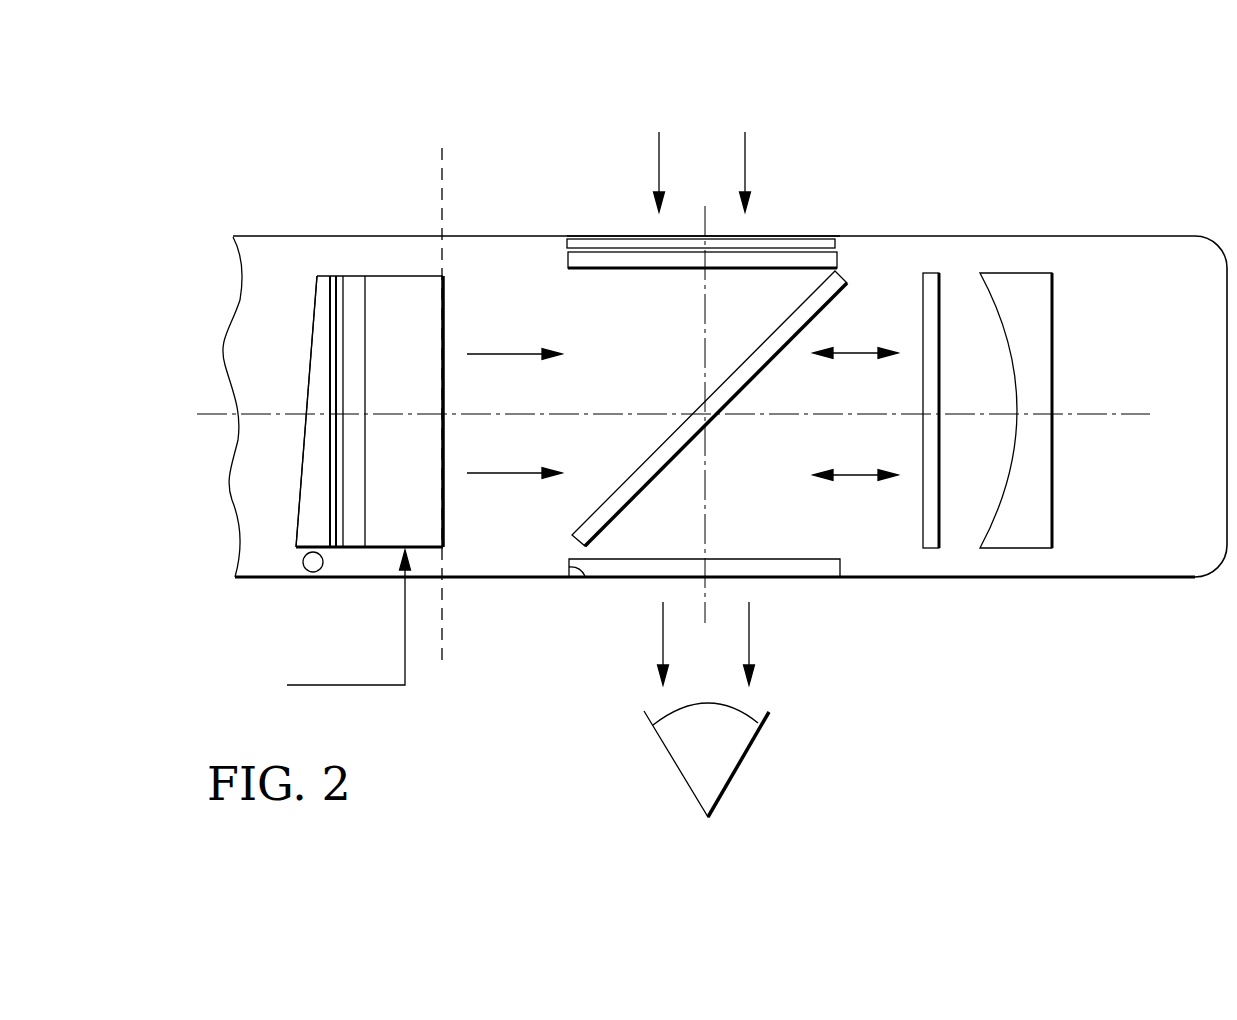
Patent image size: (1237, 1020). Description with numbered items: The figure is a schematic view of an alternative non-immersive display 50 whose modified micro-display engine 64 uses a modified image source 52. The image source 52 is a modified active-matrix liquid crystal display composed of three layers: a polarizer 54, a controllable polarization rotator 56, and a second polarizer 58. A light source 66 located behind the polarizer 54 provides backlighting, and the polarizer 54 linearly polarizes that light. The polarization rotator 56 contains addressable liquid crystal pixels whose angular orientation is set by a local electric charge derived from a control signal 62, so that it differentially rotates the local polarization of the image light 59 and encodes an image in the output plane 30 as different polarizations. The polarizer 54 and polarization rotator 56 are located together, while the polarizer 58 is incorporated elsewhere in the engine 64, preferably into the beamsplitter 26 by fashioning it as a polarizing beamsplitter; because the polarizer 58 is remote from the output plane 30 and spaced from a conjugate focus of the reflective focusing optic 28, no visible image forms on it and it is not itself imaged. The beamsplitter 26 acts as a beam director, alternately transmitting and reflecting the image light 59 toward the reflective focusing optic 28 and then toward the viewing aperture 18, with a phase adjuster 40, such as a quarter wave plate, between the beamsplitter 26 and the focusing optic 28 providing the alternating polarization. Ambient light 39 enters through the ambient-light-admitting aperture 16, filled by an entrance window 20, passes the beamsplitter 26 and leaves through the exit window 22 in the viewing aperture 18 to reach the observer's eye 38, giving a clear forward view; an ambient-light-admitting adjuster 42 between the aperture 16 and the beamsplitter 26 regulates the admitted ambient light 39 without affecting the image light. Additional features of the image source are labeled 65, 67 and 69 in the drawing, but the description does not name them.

The ambient-light-admitting aperture 16 is at (572, 242).
The viewing aperture 18 is at (583, 572).
The entrance window 20 is at (806, 240).
The exit window 22 is at (630, 568).
The beamsplitter 26 is at (652, 465).
The reflective focusing optic 28 is at (1017, 385).
The output plane 30 is at (442, 150).
The observer's eye 38 is at (680, 770).
The ambient light 39 is at (657, 148).
The phase adjuster 40 is at (922, 388).
The ambient-light-admitting adjuster 42 is at (642, 266).
The non-immersive display 50 is at (884, 176).
The modified image source 52 is at (462, 264).
The polarizer 54 is at (356, 283).
The polarization rotator 56 is at (311, 352).
The polarizer 58 is at (680, 408).
The image light 59 is at (503, 352).
The control signal 62 is at (330, 685).
The modified micro-display engine 64 is at (885, 279).
The inclined face 65 is at (312, 468).
The light source 66 is at (302, 565).
The layer 67 is at (330, 292).
The layer 69 is at (340, 274).